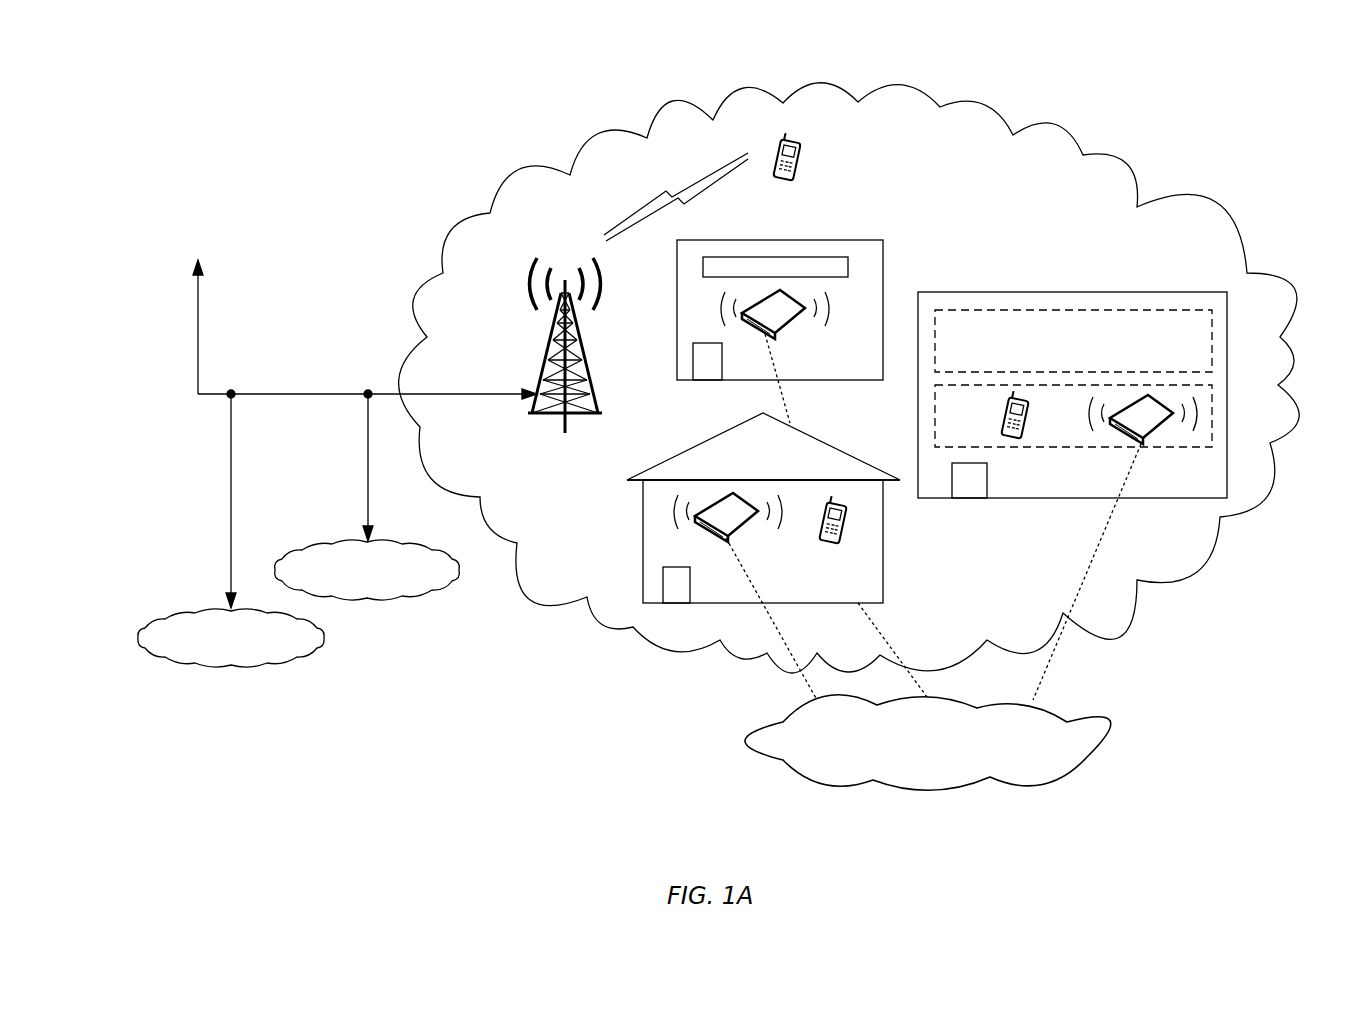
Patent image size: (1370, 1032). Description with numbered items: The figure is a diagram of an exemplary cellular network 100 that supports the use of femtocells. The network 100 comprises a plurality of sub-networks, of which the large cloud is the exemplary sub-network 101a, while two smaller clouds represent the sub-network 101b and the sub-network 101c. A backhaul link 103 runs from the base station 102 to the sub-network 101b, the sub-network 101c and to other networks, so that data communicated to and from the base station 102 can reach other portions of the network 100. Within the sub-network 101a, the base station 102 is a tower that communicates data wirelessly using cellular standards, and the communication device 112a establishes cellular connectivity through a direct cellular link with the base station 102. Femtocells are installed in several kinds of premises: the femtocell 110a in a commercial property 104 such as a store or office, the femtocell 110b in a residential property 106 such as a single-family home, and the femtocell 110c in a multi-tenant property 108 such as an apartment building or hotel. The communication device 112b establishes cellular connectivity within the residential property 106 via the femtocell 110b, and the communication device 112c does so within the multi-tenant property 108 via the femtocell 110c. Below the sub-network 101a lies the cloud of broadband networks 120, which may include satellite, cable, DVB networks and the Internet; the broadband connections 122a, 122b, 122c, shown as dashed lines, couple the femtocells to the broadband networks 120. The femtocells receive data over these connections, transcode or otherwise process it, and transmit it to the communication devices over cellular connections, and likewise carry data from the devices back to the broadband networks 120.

The network 100 is at (300, 70).
The sub-network 101a is at (663, 101).
The sub-network 101b is at (401, 596).
The sub-network 101c is at (263, 664).
The base station 102 is at (552, 362).
The backhaul links 103 is at (299, 395).
The commercial property 104 is at (862, 241).
The residential property 106 is at (850, 455).
The multi-tenant property 108 is at (1195, 292).
The femtocell 110a is at (783, 326).
The femtocell 110b is at (747, 522).
The femtocell 110c is at (1157, 433).
The communication device 112a is at (800, 150).
The communication device 112b is at (835, 547).
The communication device 112c is at (1003, 418).
The broadband networks 120 is at (1081, 773).
The broadband connection 122a is at (877, 637).
The broadband connection 122b is at (777, 637).
The broadband connection 122c is at (1097, 580).